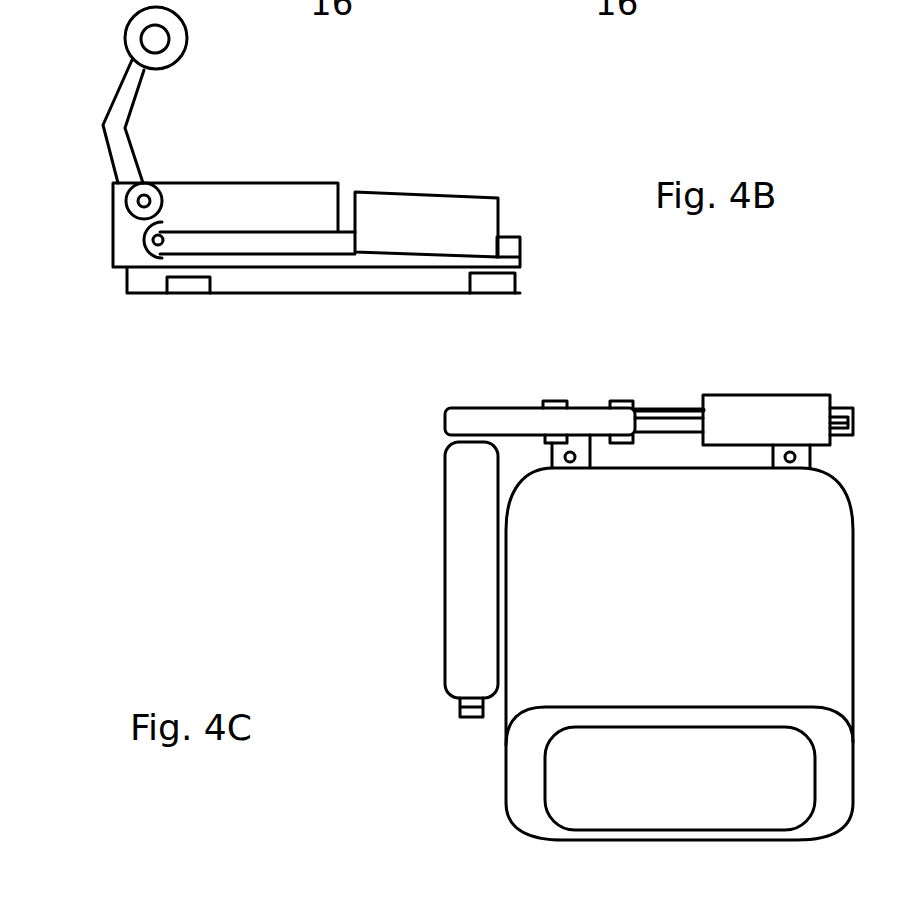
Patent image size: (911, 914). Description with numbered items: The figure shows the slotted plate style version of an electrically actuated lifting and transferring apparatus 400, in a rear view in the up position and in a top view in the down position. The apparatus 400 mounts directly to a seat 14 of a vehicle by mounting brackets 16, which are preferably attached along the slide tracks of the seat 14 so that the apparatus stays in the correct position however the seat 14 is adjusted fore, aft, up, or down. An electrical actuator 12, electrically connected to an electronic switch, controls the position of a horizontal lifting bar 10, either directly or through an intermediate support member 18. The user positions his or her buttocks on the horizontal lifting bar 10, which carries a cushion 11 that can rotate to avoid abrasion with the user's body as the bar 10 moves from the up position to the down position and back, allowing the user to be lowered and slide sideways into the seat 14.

In FIG. 4B, the horizontal lifting bar 10 is at (157, 41).
In FIG. 4C, the horizontal lifting bar 10 is at (485, 707).
In FIG. 4B, the cushion 11 is at (130, 36).
In FIG. 4C, the cushion 11 is at (477, 622).
In FIG. 4B, the electrical actuator 12 is at (463, 195).
In FIG. 4C, the electrical actuator 12 is at (807, 418).
In FIG. 4C, the seat 14 is at (565, 685).
In FIG. 4B, the mounting brackets 16 is at (188, 287).
In FIG. 4C, the mounting brackets 16 is at (558, 448).
In FIG. 4B, the intermediate support members 18 is at (108, 132).
In FIG. 4C, the intermediate support members 18 is at (487, 426).
In FIG. 4C, the electrically actuated lifting and transferring apparatus 400 is at (258, 535).